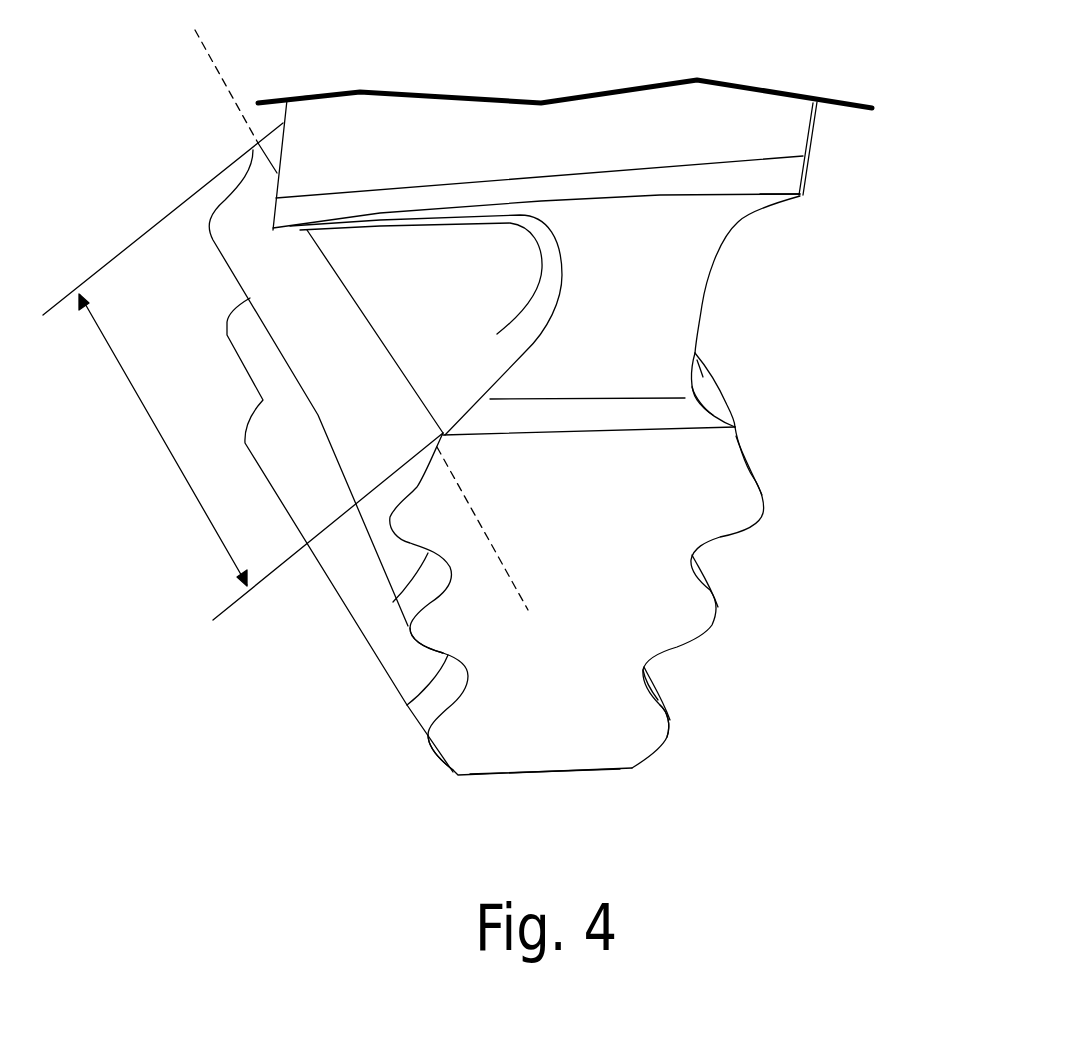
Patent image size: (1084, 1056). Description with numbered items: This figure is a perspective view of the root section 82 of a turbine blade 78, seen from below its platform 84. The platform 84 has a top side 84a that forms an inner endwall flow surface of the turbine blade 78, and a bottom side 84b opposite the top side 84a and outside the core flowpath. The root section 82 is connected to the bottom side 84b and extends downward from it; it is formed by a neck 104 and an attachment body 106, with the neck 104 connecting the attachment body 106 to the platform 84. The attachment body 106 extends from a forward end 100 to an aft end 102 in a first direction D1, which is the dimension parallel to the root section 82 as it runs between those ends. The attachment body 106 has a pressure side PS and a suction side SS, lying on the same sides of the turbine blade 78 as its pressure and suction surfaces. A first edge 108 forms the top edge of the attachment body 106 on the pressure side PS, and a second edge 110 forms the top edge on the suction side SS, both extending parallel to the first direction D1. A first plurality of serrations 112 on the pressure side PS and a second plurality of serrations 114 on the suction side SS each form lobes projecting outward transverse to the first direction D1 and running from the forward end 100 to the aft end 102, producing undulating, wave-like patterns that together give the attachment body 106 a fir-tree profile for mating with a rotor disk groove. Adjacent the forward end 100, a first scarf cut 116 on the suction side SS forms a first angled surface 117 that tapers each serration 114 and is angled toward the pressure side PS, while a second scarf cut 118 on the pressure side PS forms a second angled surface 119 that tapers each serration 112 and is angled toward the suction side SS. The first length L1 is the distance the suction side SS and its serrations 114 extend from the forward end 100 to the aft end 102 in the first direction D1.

The turbine blade 78 is at (822, 307).
The root section 82 is at (588, 412).
The platform 84 is at (563, 183).
The top side 84a is at (745, 135).
The bottom side 84b is at (788, 198).
The forward end 100 is at (562, 713).
The aft end 102 is at (223, 197).
The neck 104 is at (683, 267).
The attachment body 106 is at (568, 522).
The first edge 108 is at (710, 373).
The second edge 110 is at (357, 305).
The first plurality of serrations 112 is at (653, 668).
The second plurality of serrations 114 is at (262, 423).
The first scarf cut 116 is at (405, 597).
The first angled surface 117 is at (423, 710).
The second scarf cut 118 is at (662, 697).
The second angled surface 119 is at (650, 685).
The first direction D1 is at (212, 53).
The first length L1 is at (159, 442).
The pressure side PS is at (802, 633).
The suction side SS is at (306, 626).